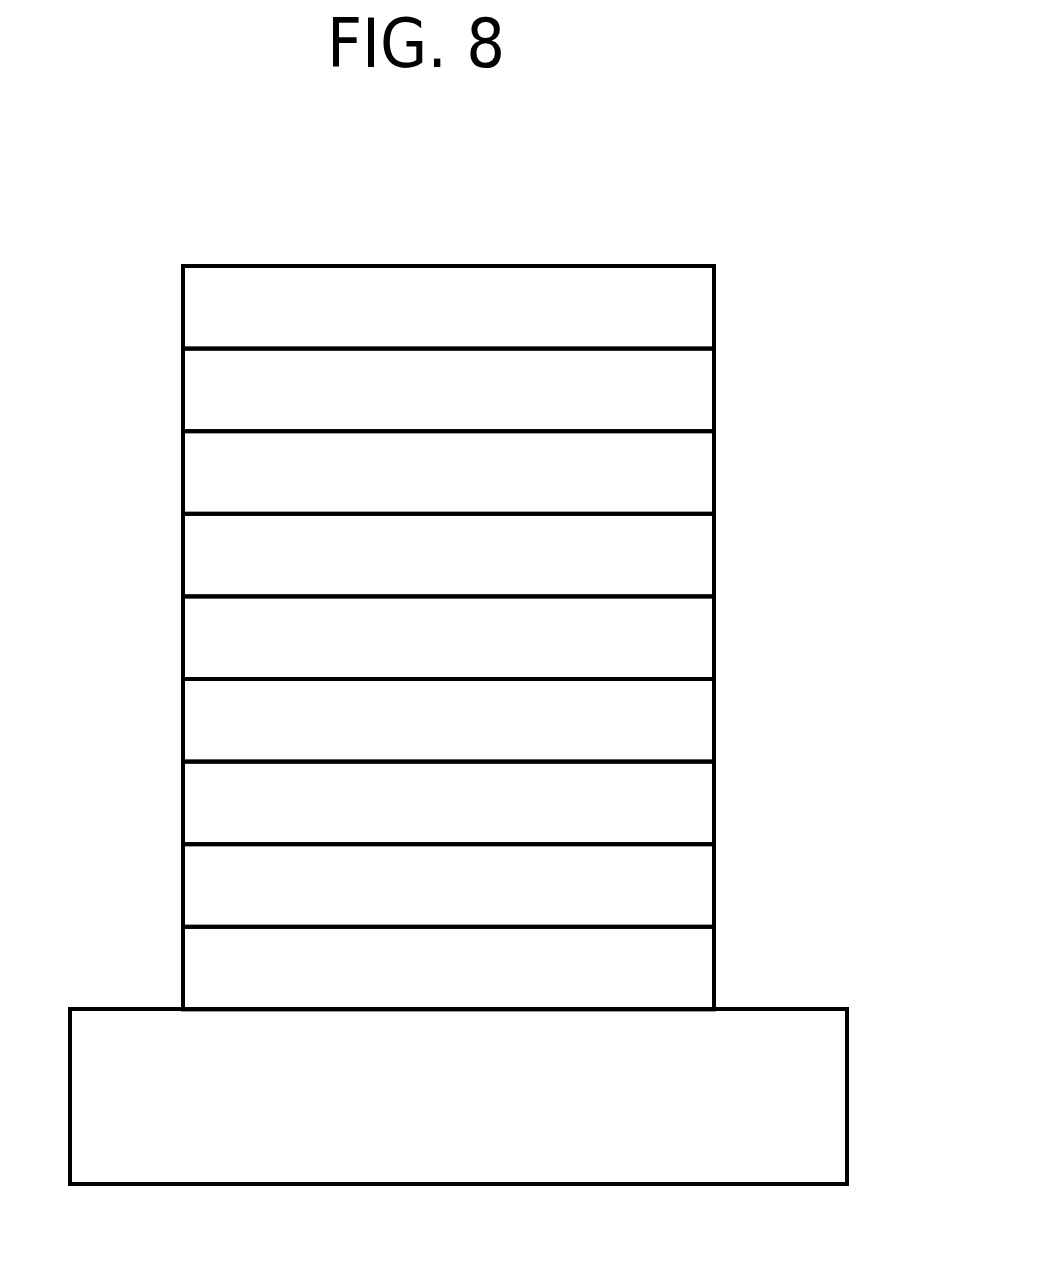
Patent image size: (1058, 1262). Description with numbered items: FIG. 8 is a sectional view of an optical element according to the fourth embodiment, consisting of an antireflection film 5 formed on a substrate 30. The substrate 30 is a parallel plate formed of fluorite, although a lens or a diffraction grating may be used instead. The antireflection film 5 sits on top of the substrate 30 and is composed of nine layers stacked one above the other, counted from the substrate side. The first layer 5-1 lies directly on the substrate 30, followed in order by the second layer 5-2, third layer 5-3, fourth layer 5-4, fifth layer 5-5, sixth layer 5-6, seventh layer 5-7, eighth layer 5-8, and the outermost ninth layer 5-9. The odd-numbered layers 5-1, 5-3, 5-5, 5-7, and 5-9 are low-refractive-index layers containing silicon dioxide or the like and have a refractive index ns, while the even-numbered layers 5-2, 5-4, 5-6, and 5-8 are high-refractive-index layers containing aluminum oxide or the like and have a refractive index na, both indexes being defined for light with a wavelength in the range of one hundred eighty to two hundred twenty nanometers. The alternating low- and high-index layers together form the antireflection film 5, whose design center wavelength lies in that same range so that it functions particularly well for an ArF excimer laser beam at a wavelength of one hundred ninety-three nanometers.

The antireflection film 5 is at (777, 680).
The first layer (low-refractive-index layer) 5-1 is at (208, 966).
The second layer (high-refractive-index layer) 5-2 is at (208, 883).
The third layer (low-refractive-index layer) 5-3 is at (208, 801).
The fourth layer (high-refractive-index layer) 5-4 is at (208, 718).
The fifth layer (low-refractive-index layer) 5-5 is at (208, 635).
The sixth layer (high-refractive-index layer) 5-6 is at (208, 553).
The seventh layer (low-refractive-index layer) 5-7 is at (208, 470).
The eighth layer (high-refractive-index layer) 5-8 is at (208, 388).
The ninth layer (low-refractive-index layer) 5-9 is at (208, 305).
The substrate 30 is at (818, 1080).